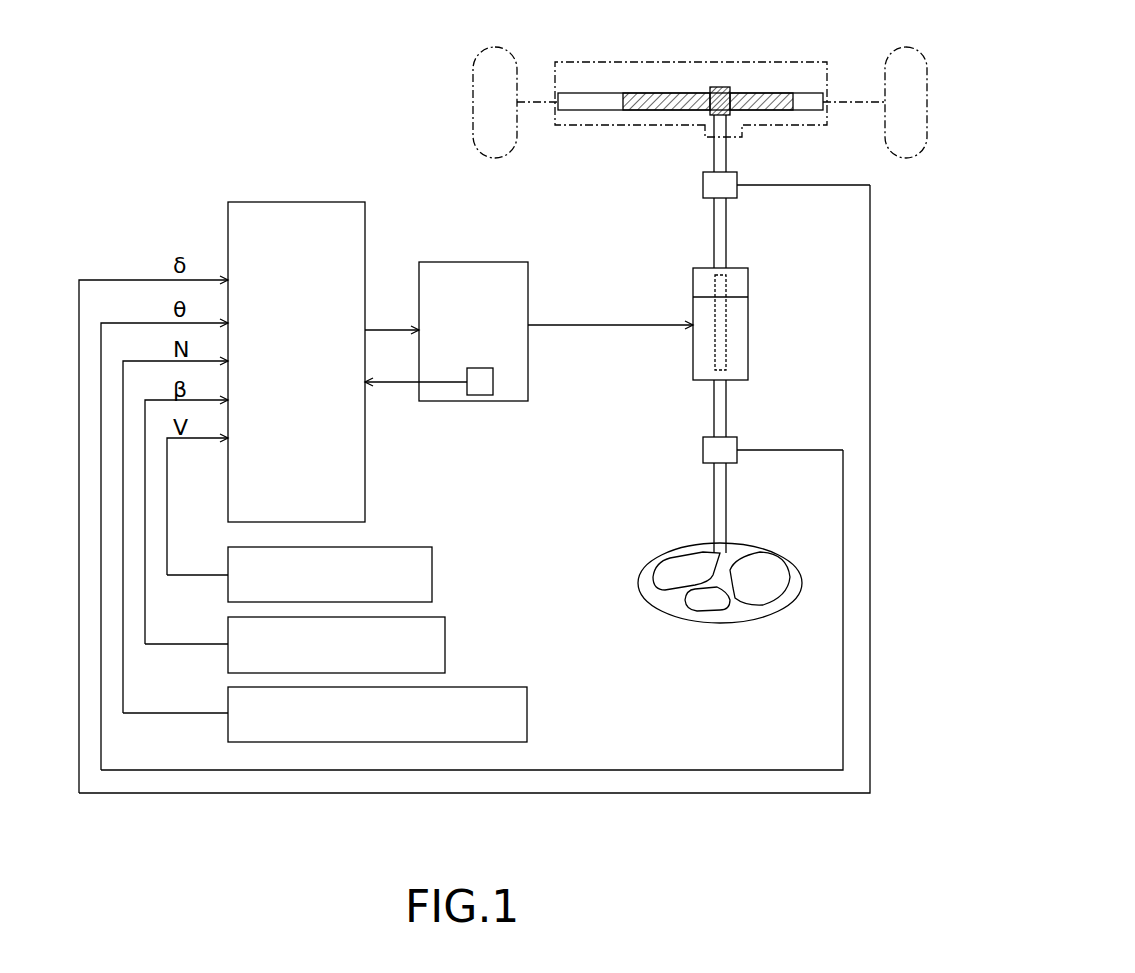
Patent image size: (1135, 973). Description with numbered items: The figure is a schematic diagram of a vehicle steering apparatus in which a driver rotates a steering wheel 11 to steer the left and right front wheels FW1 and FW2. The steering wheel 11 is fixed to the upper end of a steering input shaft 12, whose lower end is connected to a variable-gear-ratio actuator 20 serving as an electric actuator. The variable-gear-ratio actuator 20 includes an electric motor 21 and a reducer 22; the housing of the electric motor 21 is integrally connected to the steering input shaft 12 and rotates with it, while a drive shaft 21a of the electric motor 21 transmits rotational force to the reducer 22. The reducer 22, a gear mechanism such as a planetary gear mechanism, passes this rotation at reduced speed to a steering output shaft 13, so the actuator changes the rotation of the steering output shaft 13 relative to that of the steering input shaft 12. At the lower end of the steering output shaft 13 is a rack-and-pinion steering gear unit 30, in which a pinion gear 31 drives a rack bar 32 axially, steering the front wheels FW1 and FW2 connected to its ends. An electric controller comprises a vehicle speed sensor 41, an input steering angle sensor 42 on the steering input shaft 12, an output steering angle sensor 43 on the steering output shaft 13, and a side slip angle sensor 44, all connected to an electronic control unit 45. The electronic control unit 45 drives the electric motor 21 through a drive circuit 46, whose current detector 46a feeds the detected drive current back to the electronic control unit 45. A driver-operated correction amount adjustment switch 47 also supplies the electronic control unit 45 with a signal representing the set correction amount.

The front wheel FW1 is at (903, 50).
The front wheel FW2 is at (493, 47).
The steering gear unit 30 is at (691, 92).
The pinion gear 31 is at (728, 116).
The rack bar 32 is at (747, 92).
The output steering angle sensor 43 is at (703, 185).
The steering output shaft 13 is at (720, 222).
The variable-gear-ratio actuator 20 is at (726, 305).
The electric motor 21 is at (748, 367).
The drive shaft 21a is at (715, 370).
The reducer 22 is at (693, 268).
The steering input shaft 12 is at (727, 408).
The input steering angle sensor 42 is at (703, 448).
The steering wheel 11 is at (740, 617).
The electronic control unit 45 is at (323, 202).
The drive circuit 46 is at (504, 319).
The current detector 46a is at (493, 382).
The vehicle speed sensor 41 is at (432, 575).
The side slip angle sensor 44 is at (445, 645).
The correction amount adjustment switch 47 is at (527, 713).